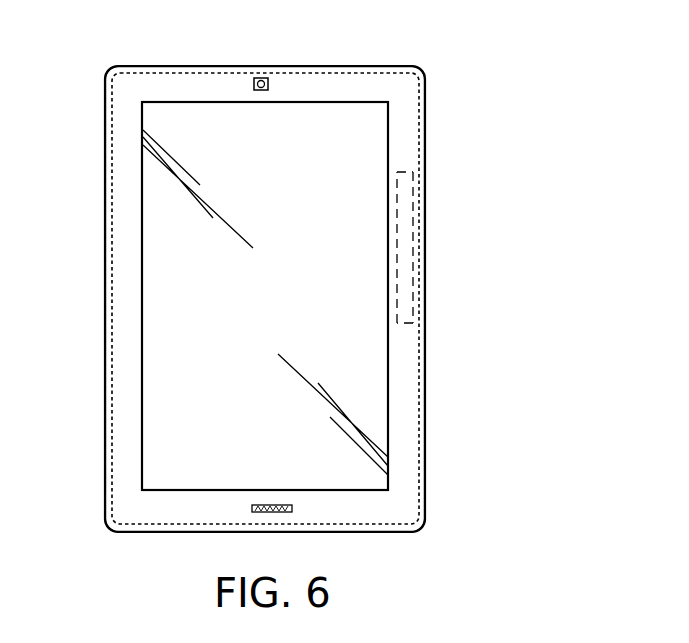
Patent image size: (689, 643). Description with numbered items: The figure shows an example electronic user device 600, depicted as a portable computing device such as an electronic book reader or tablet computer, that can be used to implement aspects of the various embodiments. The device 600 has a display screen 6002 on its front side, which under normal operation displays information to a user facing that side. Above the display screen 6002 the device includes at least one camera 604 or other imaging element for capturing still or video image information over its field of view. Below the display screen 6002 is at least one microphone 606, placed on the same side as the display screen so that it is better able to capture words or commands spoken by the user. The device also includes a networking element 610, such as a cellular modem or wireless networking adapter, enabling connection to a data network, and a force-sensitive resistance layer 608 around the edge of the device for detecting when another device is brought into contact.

The electronic user device 600 is at (563, 117).
The camera 604 is at (261, 79).
The microphone 606 is at (280, 511).
The force-sensitive resistance layer 608 is at (422, 428).
The networking element 610 is at (415, 277).
The display screen 6002 is at (141, 110).